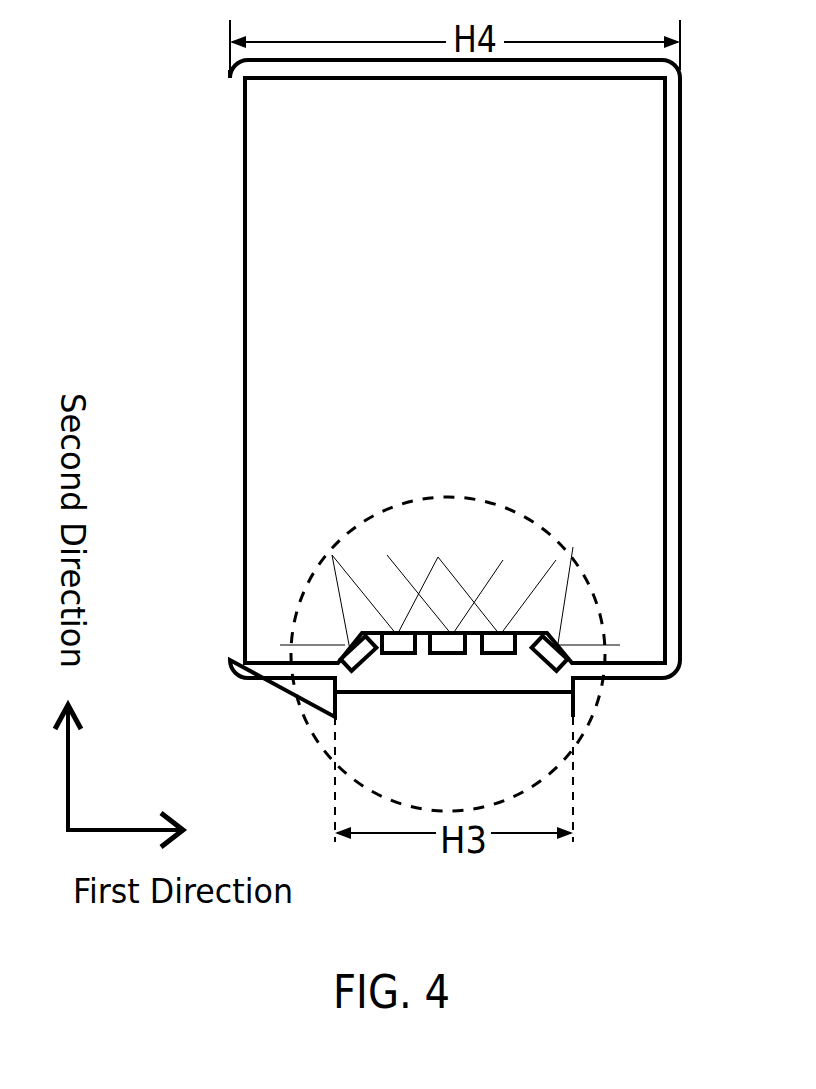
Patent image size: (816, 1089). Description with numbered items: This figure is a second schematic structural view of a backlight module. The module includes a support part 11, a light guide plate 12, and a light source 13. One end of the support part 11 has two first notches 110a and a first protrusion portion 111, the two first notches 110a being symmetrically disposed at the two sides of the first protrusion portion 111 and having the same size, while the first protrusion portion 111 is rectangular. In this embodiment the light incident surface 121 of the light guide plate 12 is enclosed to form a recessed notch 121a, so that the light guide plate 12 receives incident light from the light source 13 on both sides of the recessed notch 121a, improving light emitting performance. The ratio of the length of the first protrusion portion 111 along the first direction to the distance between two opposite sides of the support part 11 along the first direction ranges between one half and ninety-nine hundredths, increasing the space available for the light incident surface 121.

The support part 11 is at (677, 340).
The light guide plate 12 is at (663, 412).
The light source 13 is at (500, 638).
The first protrusion portion 111 is at (477, 694).
The light incident surface 121 is at (523, 637).
The recessed notch 121a is at (445, 670).
The first notches 110a is at (272, 691).